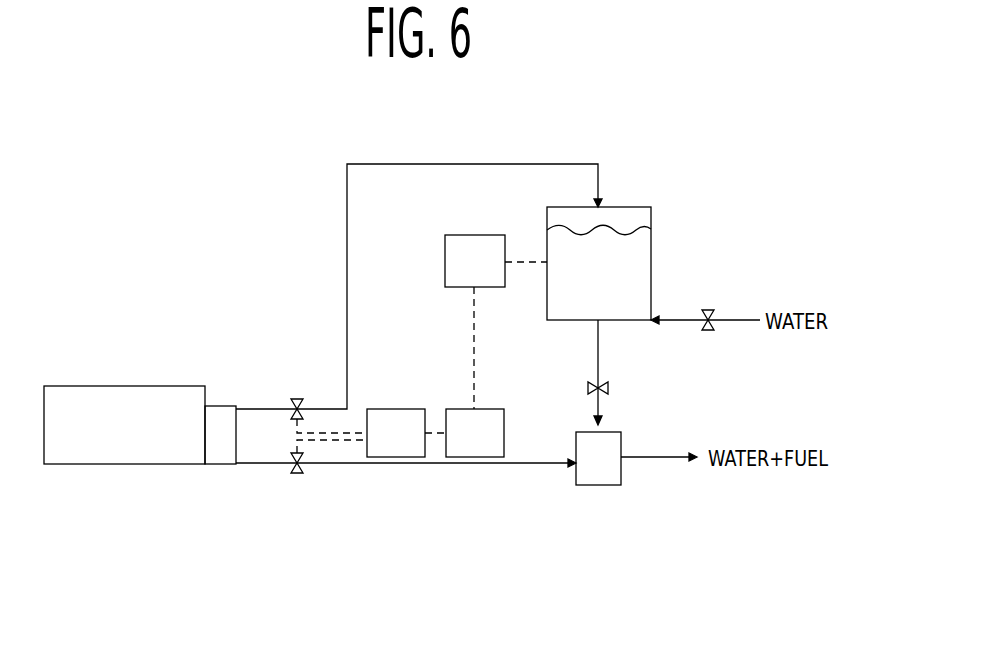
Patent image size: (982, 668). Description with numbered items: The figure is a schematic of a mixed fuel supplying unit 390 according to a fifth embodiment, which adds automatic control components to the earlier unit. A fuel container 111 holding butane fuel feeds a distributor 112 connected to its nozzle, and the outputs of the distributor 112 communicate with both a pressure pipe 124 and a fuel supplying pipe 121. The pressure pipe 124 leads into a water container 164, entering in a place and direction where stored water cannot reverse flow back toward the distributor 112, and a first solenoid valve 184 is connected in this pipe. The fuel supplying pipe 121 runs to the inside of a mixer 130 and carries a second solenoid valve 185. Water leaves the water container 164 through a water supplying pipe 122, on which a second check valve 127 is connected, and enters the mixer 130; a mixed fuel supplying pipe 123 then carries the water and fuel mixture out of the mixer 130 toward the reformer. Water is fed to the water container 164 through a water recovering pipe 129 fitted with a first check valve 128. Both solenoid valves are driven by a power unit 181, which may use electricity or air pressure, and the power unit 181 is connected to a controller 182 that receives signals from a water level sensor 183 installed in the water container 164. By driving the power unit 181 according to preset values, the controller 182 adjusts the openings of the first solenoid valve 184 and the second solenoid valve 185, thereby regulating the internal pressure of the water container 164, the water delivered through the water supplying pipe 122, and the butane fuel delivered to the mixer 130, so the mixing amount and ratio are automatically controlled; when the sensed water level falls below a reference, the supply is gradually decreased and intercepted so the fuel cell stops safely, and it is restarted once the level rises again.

The mixed fuel supplying unit 390 is at (228, 206).
The fuel container 111 is at (125, 386).
The distributor 112 is at (218, 406).
The pressure pipe 124 is at (435, 163).
The first solenoid valve 184 is at (300, 398).
The second solenoid valve 185 is at (294, 475).
The fuel supplying pipe 121 is at (474, 465).
The power unit 181 is at (397, 409).
The controller 182 is at (497, 409).
The water level sensor 183 is at (475, 235).
The water container 164 is at (625, 207).
The water recovering pipe 129 is at (730, 321).
The first check valve 128 is at (708, 310).
The water supplying pipe 122 is at (598, 348).
The second check valve 127 is at (608, 388).
The mixer 130 is at (598, 485).
The mixed fuel supplying pipe 123 is at (667, 459).